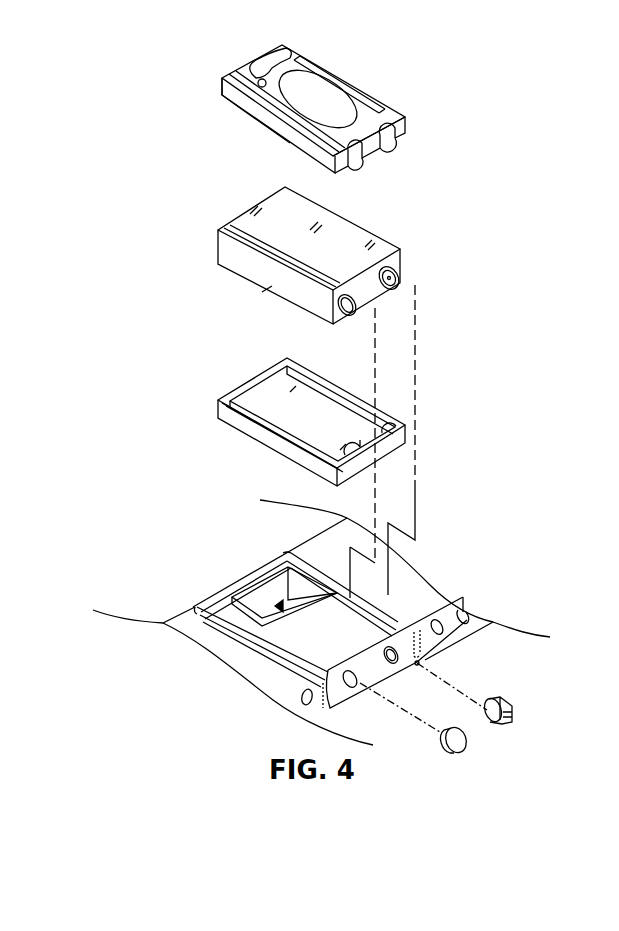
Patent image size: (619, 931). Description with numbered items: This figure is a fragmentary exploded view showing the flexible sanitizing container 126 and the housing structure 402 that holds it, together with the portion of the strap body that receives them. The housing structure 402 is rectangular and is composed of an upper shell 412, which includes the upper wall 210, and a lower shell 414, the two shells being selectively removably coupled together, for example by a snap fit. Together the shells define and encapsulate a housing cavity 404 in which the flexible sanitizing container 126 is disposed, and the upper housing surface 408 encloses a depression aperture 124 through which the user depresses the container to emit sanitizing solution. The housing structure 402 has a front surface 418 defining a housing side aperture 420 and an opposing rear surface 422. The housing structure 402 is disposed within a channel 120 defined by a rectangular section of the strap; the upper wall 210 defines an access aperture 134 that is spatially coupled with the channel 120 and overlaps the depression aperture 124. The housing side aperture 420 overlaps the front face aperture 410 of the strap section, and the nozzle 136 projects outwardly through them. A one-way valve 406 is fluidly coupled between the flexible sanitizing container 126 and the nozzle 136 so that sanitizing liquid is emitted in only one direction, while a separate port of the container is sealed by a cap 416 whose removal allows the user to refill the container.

The channel 120 is at (321, 622).
The depression aperture 124 is at (306, 110).
The flexible sanitizing container 126 is at (347, 228).
The access aperture 134 is at (260, 603).
The nozzle 136 is at (510, 713).
The upper wall 210 is at (370, 115).
The housing structure 402 is at (302, 255).
The housing cavity 404 is at (277, 408).
The one-way valve 406 is at (398, 272).
The upper housing surface 408 is at (237, 80).
The front face aperture 410 is at (393, 650).
The upper shell 412 is at (263, 125).
The lower shell 414 is at (259, 416).
The cap 416 is at (460, 742).
The front surface 418 is at (363, 145).
The housing side aperture 420 is at (390, 138).
The rear surface 422 is at (212, 92).